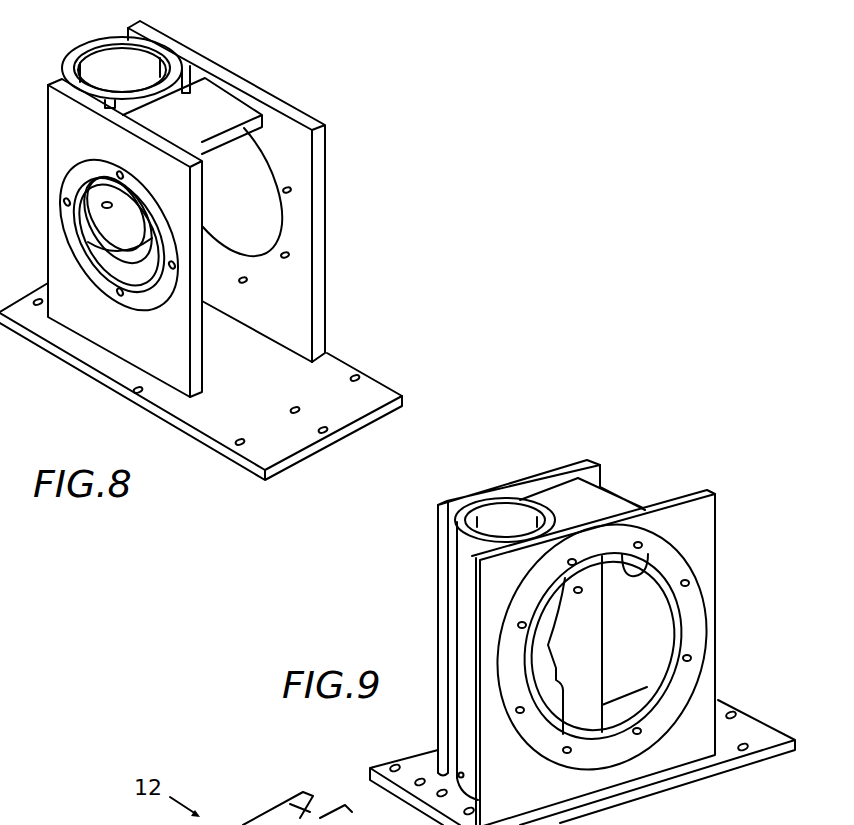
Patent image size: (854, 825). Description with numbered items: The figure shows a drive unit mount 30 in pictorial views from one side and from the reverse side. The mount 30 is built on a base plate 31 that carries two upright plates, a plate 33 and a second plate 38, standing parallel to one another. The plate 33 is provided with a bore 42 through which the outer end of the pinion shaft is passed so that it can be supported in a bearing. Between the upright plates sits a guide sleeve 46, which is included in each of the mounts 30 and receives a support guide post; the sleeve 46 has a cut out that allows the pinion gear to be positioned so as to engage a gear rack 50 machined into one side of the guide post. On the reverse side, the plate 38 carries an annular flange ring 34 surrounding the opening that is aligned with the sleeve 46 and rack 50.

In FIG. 8, the drive unit mount 30 is at (349, 126).
In FIG. 9, the drive unit mount 30 is at (626, 440).
In FIG. 8, the base plate 31 is at (344, 368).
In FIG. 9, the base plate 31 is at (755, 728).
In FIG. 8, the plate 33 is at (48, 137).
In FIG. 9, the plate 33 is at (497, 486).
In FIG. 9, the annular flange ring 34 is at (645, 565).
In FIG. 8, the second upright plate 38 is at (319, 243).
In FIG. 9, the second upright plate 38 is at (707, 521).
In FIG. 8, the bore 42 is at (100, 257).
In FIG. 8, the guide sleeve 46 is at (97, 45).
In FIG. 9, the guide sleeve 46 is at (462, 617).
In FIG. 8, the gear rack 50 is at (103, 204).
In FIG. 9, the gear rack 50 is at (548, 658).